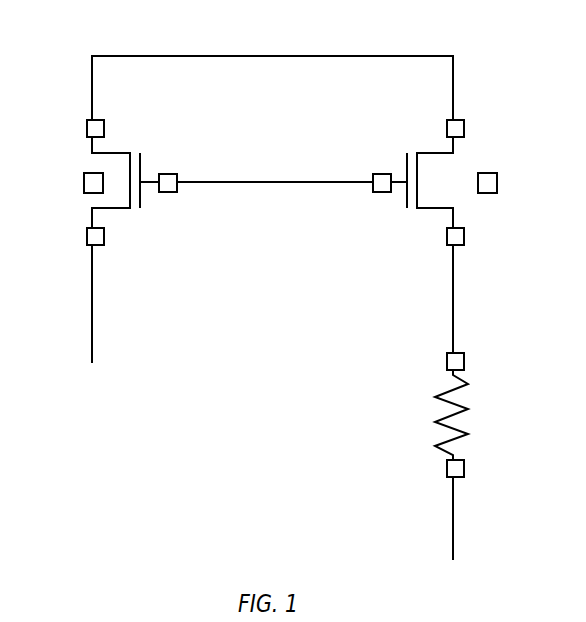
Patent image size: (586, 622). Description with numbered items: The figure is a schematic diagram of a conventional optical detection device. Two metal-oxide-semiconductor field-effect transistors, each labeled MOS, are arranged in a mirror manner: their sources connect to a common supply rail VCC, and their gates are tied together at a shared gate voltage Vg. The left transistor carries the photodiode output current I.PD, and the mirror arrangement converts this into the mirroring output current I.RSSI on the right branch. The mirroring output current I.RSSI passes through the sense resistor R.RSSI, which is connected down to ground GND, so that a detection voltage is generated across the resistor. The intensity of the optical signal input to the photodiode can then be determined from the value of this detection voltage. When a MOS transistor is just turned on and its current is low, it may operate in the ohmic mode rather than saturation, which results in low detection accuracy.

The supply voltage rail VCC is at (275, 78).
The MOS transistor MOS is at (268, 182).
The gate voltage Vg is at (275, 169).
The photodiode current I.PD is at (81, 295).
The mirroring output current I.RSSI is at (440, 290).
The sense resistor R.RSSI is at (431, 415).
The ground GND is at (436, 518).